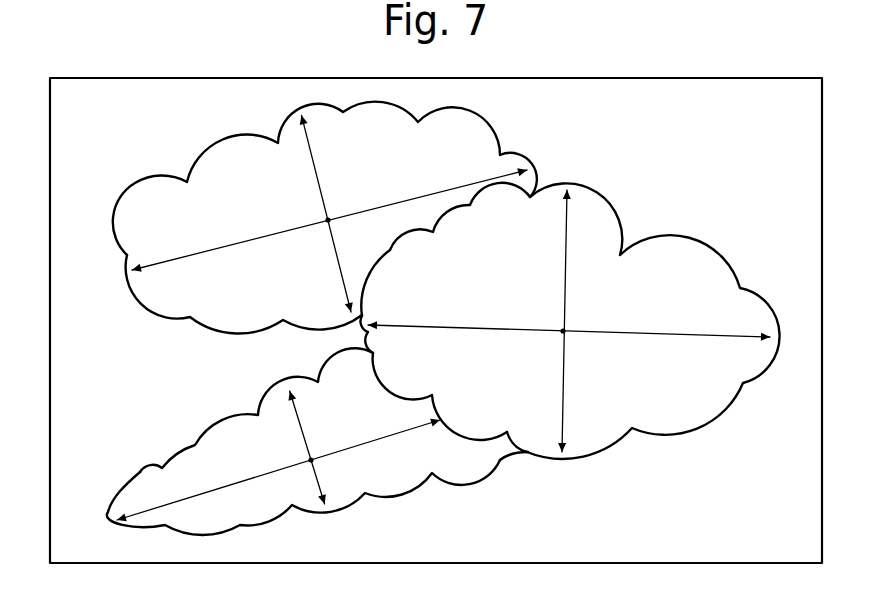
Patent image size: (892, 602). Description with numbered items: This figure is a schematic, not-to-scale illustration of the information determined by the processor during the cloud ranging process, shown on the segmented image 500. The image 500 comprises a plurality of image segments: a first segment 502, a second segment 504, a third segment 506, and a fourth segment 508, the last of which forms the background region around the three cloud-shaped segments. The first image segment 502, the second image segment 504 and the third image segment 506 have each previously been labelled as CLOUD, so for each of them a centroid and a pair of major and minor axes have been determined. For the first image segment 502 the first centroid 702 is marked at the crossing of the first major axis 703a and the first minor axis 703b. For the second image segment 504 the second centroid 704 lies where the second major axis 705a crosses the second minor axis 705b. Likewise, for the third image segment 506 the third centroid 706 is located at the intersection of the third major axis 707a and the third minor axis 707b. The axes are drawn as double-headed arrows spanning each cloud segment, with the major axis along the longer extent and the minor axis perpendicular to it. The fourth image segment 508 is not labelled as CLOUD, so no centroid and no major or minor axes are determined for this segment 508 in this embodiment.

The segmented image 500 is at (752, 78).
The first image segment 502 is at (690, 435).
The second image segment 504 is at (138, 182).
The third image segment 506 is at (138, 472).
The fourth image segment 508 is at (776, 140).
The first centroid 702 is at (565, 330).
The first major axis 703a is at (658, 335).
The first minor axis 703b is at (566, 277).
The second centroid 704 is at (330, 218).
The second major axis 705a is at (267, 238).
The second minor axis 705b is at (312, 185).
The third centroid 706 is at (313, 462).
The third major axis 707a is at (223, 486).
The third minor axis 707b is at (350, 420).